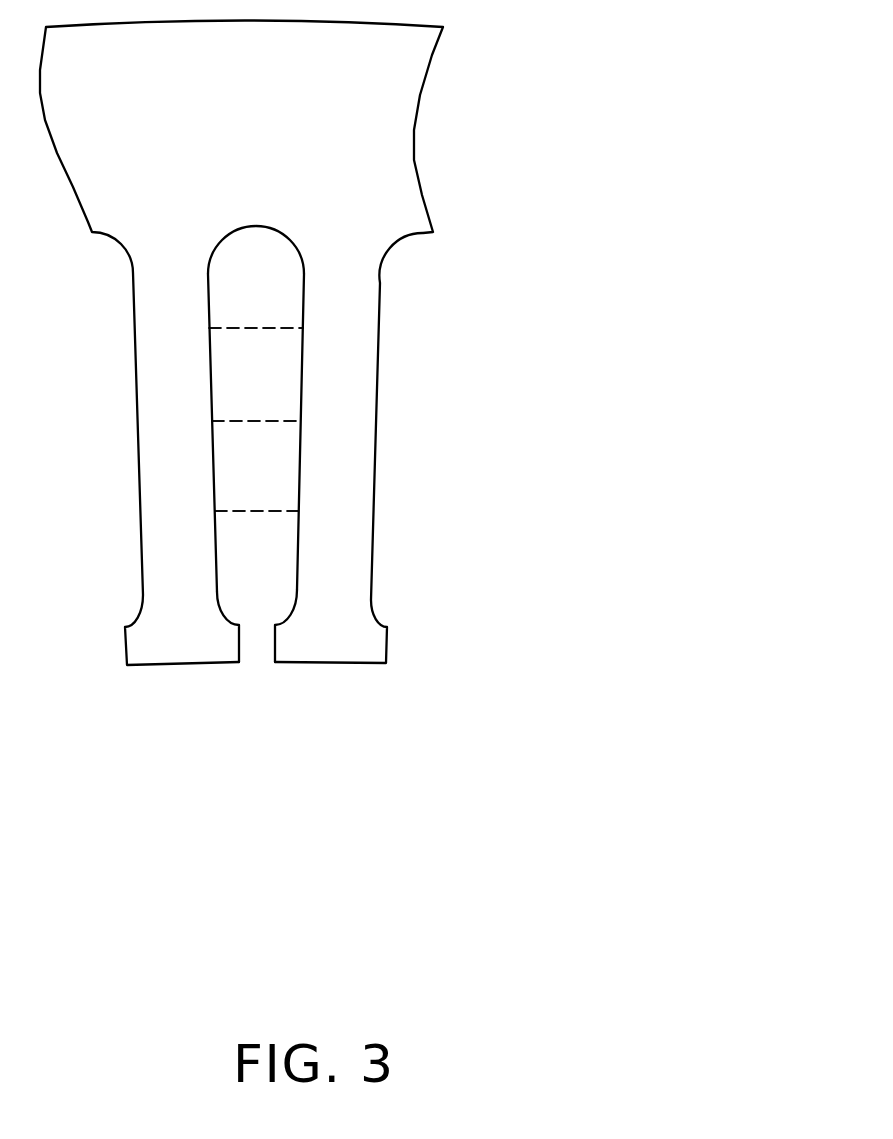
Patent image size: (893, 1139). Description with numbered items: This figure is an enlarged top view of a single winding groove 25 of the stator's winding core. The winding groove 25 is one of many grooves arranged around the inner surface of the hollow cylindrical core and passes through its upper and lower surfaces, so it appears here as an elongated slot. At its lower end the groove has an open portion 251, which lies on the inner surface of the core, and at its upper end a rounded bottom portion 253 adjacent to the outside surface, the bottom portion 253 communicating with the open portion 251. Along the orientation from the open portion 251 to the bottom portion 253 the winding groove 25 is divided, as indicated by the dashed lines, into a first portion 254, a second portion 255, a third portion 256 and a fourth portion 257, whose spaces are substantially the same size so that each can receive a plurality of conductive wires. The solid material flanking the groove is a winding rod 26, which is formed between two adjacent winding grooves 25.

The winding groove 25 is at (260, 598).
The open portion 251 is at (253, 649).
The bottom portion 253 is at (270, 227).
The first portion 254 is at (286, 547).
The second portion 255 is at (286, 473).
The third portion 256 is at (286, 388).
The fourth portion 257 is at (276, 307).
The winding rod 26 is at (163, 477).